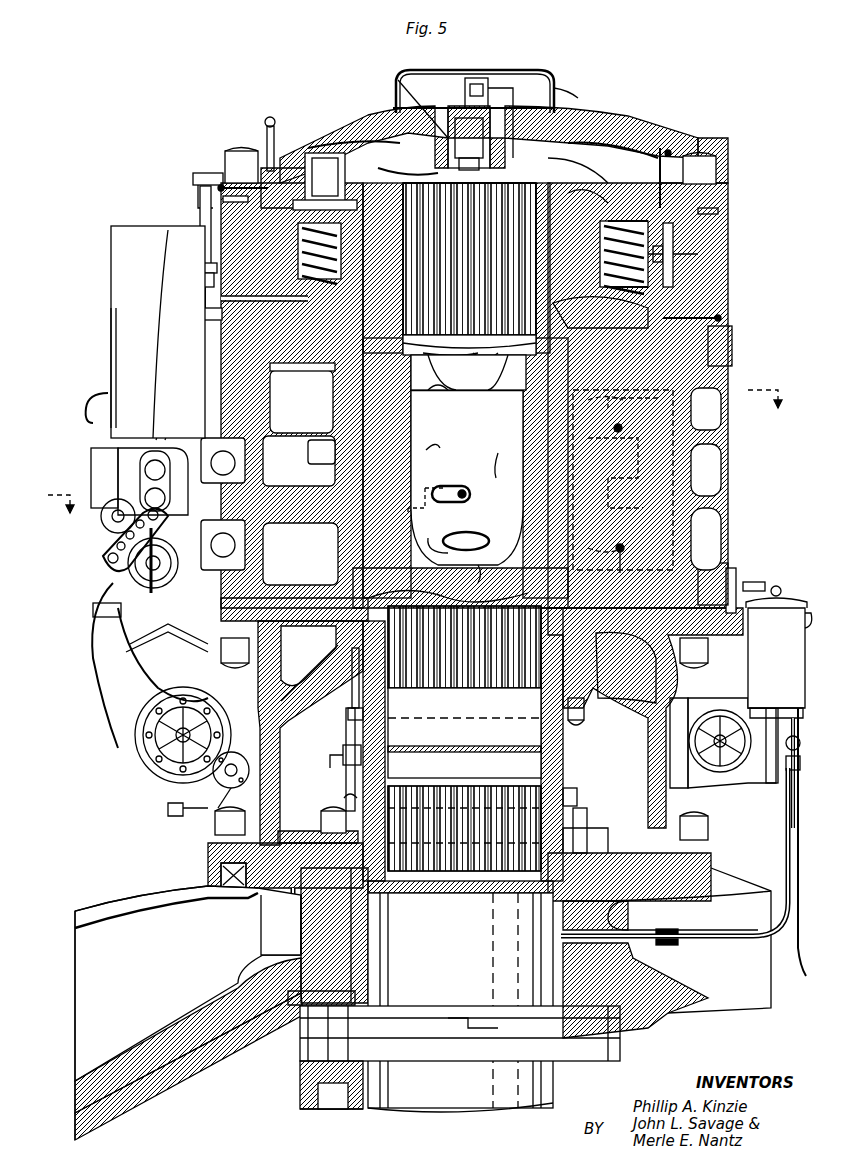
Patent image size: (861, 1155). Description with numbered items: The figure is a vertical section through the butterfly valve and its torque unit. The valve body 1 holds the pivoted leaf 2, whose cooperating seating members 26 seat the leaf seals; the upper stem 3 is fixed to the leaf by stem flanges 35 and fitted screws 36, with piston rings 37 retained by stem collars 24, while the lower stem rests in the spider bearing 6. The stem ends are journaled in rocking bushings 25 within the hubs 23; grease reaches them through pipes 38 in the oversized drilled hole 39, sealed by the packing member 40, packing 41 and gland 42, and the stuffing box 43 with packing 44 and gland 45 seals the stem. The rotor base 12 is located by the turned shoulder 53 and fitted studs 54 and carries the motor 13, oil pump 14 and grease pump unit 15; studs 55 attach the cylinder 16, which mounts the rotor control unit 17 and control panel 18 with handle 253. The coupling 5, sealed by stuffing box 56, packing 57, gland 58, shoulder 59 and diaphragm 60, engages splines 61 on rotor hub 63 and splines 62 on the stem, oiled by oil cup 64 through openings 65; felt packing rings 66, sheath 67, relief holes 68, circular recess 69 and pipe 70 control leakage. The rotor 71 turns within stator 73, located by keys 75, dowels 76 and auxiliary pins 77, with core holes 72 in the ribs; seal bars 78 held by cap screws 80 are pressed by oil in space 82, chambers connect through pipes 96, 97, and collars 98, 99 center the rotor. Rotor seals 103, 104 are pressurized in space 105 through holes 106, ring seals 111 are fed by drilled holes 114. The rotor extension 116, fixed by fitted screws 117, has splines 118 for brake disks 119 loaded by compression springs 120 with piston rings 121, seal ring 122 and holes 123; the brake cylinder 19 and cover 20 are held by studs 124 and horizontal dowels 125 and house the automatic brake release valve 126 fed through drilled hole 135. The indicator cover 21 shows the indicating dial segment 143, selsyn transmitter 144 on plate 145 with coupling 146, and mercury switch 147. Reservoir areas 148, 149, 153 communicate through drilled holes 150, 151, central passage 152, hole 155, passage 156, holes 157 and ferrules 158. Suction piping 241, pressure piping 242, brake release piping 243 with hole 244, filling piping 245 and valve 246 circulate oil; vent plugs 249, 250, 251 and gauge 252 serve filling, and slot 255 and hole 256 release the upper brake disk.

The valve body 1 is at (195, 995).
The leaf 2 is at (293, 1101).
The upper stem 3 is at (470, 935).
The coupling 5 is at (555, 760).
The spider bearing 6 is at (421, 446).
The rotor base 12 is at (655, 812).
The motor 13 is at (130, 680).
The oil pump 14 is at (135, 715).
The grease pump unit 15 is at (785, 674).
The cylinder 16 is at (725, 436).
The rotor control unit 17 is at (88, 455).
The control panel 18 is at (100, 340).
The brake cylinder 19 is at (718, 272).
The cover 20 is at (320, 118).
The indicator cover 21 is at (520, 66).
The hubs 23 is at (300, 930).
The stem collars 24 is at (290, 1010).
The rocking bushings 25 is at (360, 928).
The cooperating seating members 26 is at (130, 1090).
The stem flanges 35 is at (440, 1043).
The fitted screws 36 is at (292, 1072).
The piston rings 37 is at (470, 1012).
The grease pipes 38 is at (782, 920).
The drilled hole 39 is at (525, 922).
The packing member 40 is at (640, 948).
The packing 41 is at (665, 922).
The gland 42 is at (668, 938).
The stuffing box 43 is at (316, 828).
The packing 44 is at (312, 806).
The gland 45 is at (337, 795).
The turned shoulder 53 is at (255, 880).
The fitted studs 54 is at (205, 822).
The studs 55 is at (215, 645).
The stuffing box 56 is at (324, 685).
The packing 57 is at (338, 705).
The gland 58 is at (578, 710).
The shoulder 59 is at (640, 690).
The diaphragm 60 is at (436, 738).
The splines 61 is at (492, 660).
The splines 62 is at (440, 800).
The rotor hub 63 is at (445, 672).
The oil cup 64 is at (333, 745).
The openings 65 is at (557, 745).
The felt packing rings 66 is at (372, 880).
The sheath 67 is at (540, 882).
The relief holes 68 is at (560, 805).
The circular recess 69 is at (600, 845).
The pipe 70 is at (248, 908).
The rotor 71 is at (525, 430).
The core holes 72 is at (718, 465).
The stator 73 is at (276, 402).
The keys 75 is at (276, 467).
The dowels 76 is at (728, 333).
The auxiliary pins 77 is at (735, 360).
The seal bars 78 is at (375, 452).
The shouldered fillister head cap screws 80 is at (330, 440).
The space 82 is at (332, 460).
The pipe 96 is at (464, 470).
The pipe 97 is at (462, 525).
The anti-friction collar 98 is at (410, 580).
The anti-friction collar 99 is at (400, 345).
The horizontal seal bars 103 is at (623, 480).
The vertical seal bars 104 is at (722, 512).
The space 105 is at (716, 530).
The holes 106 is at (645, 530).
The ring seals 111 is at (495, 560).
The drilled holes 114 is at (330, 615).
The rotor extension 116 is at (490, 380).
The fitted screws 117 is at (400, 400).
The splines 118 is at (462, 342).
The brake disks 119 is at (650, 225).
The compression springs 120 is at (660, 248).
The piston rings 121 is at (608, 175).
The seal ring 122 is at (690, 262).
The holes 123 is at (575, 180).
The studs 124 is at (230, 140).
The horizontal dowels 125 is at (220, 190).
The automatic brake release valve 126 is at (314, 145).
The drilled hole 135 is at (200, 165).
The indicating dial segment 143 is at (388, 88).
The selsyn transmitter 144 is at (392, 70).
The plate 145 is at (530, 88).
The coupling 146 is at (482, 120).
The mercury switch 147 is at (468, 72).
The reservoir area 148 is at (298, 668).
The reservoir area 149 is at (372, 115).
The drilled hole 150 is at (500, 590).
The drilled hole 151 is at (425, 165).
The central passage 152 is at (462, 456).
The reservoir area 153 is at (268, 503).
The hole 155 is at (318, 555).
The passage 156 is at (320, 379).
The holes 157 is at (460, 348).
The ferrules 158 is at (300, 474).
The suction piping 241 is at (130, 650).
The pressure piping 242 is at (86, 620).
The brake release piping 243 is at (160, 303).
The hole 244 is at (186, 266).
The filling piping 245 is at (165, 800).
The valve 246 is at (242, 762).
The vent plug 249 is at (712, 310).
The vent plug 250 is at (662, 145).
The vent plug 251 is at (652, 142).
The gauge 252 is at (260, 125).
The handle 253 is at (82, 390).
The slot 255 is at (192, 210).
The hole 256 is at (210, 178).